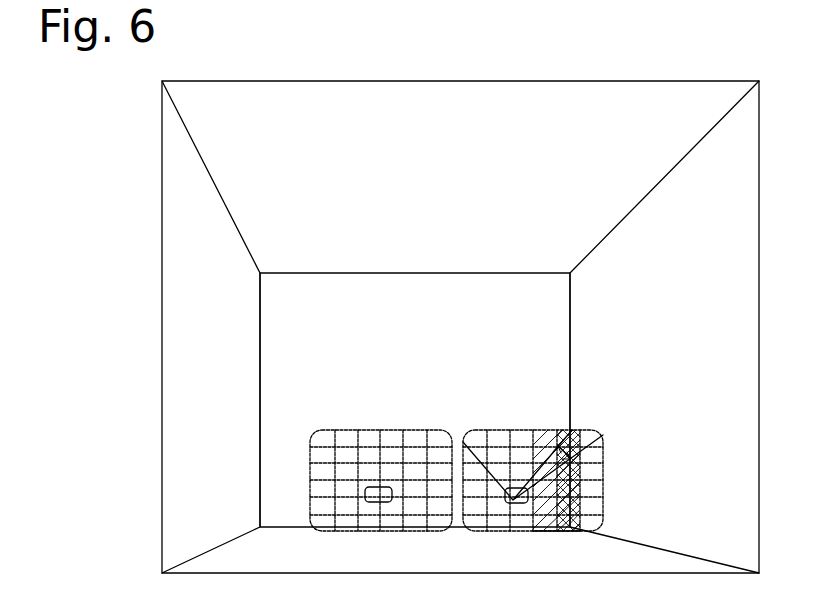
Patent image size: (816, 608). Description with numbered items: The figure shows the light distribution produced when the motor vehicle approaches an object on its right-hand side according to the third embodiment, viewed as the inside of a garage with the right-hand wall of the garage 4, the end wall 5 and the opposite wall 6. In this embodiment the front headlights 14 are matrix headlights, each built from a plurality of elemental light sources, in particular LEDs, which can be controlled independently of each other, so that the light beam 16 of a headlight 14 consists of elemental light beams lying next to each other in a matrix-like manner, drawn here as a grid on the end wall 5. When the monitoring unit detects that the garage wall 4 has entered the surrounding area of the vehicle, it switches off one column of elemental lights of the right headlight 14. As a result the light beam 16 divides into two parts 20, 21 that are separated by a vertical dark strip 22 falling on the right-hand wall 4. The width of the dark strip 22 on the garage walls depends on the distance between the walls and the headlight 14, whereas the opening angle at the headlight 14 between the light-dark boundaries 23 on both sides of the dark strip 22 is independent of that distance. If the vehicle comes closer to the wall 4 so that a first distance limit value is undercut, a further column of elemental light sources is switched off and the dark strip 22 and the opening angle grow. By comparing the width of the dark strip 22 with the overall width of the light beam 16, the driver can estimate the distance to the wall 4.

The right-hand wall of the garage 4 is at (636, 299).
The end wall of the garage 5 is at (435, 357).
The left wall 6 is at (196, 338).
The front headlight 14 is at (374, 503).
The light beam 16 is at (342, 435).
The first part of the light beam 20 is at (477, 440).
The second part of the light beam 21 is at (600, 488).
The vertical dark strip 22 is at (565, 440).
The light-dark boundaries 23 is at (583, 508).